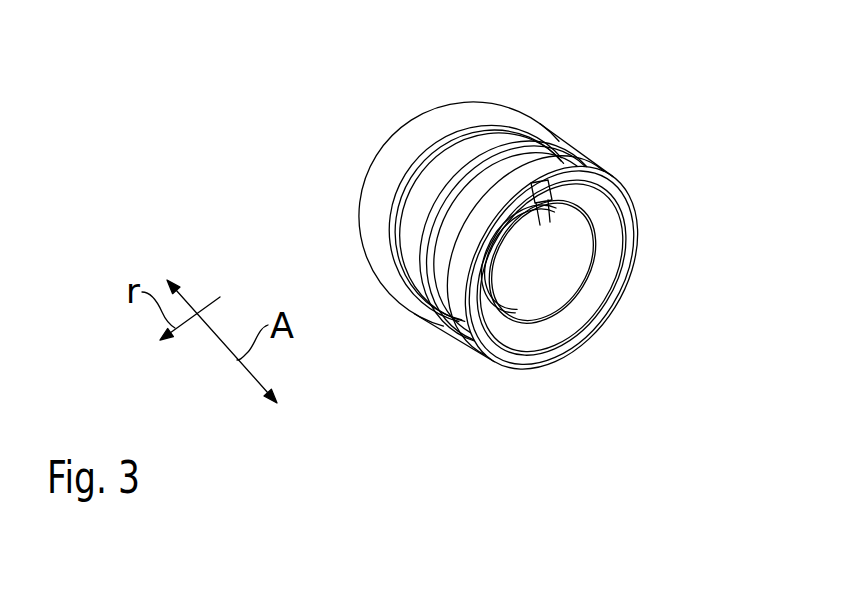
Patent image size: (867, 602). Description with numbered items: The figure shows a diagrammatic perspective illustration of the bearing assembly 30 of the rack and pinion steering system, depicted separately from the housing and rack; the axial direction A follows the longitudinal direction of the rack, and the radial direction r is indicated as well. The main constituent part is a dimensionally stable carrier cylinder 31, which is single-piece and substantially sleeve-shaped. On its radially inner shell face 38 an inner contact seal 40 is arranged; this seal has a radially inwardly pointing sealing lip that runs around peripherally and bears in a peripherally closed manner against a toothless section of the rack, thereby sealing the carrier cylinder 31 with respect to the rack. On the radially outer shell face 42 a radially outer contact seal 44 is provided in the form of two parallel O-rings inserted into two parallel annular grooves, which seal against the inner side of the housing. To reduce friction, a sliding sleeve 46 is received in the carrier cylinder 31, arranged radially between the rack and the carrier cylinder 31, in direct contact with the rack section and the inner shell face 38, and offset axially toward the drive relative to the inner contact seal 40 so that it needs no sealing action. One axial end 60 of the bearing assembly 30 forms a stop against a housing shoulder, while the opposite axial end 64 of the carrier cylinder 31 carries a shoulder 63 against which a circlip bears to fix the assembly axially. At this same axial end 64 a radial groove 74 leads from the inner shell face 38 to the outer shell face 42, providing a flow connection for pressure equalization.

The bearing assembly 30 is at (296, 119).
The carrier cylinder 31 is at (391, 205).
The radially inner shell face 38 is at (592, 287).
The inner contact seal 40 is at (505, 255).
The radially outer shell face 42 is at (503, 110).
The radially outer contact seal 44 is at (540, 123).
The sliding sleeve 46 is at (573, 238).
The axial end 60 is at (423, 117).
The shoulder 63 is at (462, 250).
The axial end 64 is at (577, 333).
The radial groove 74 is at (573, 180).